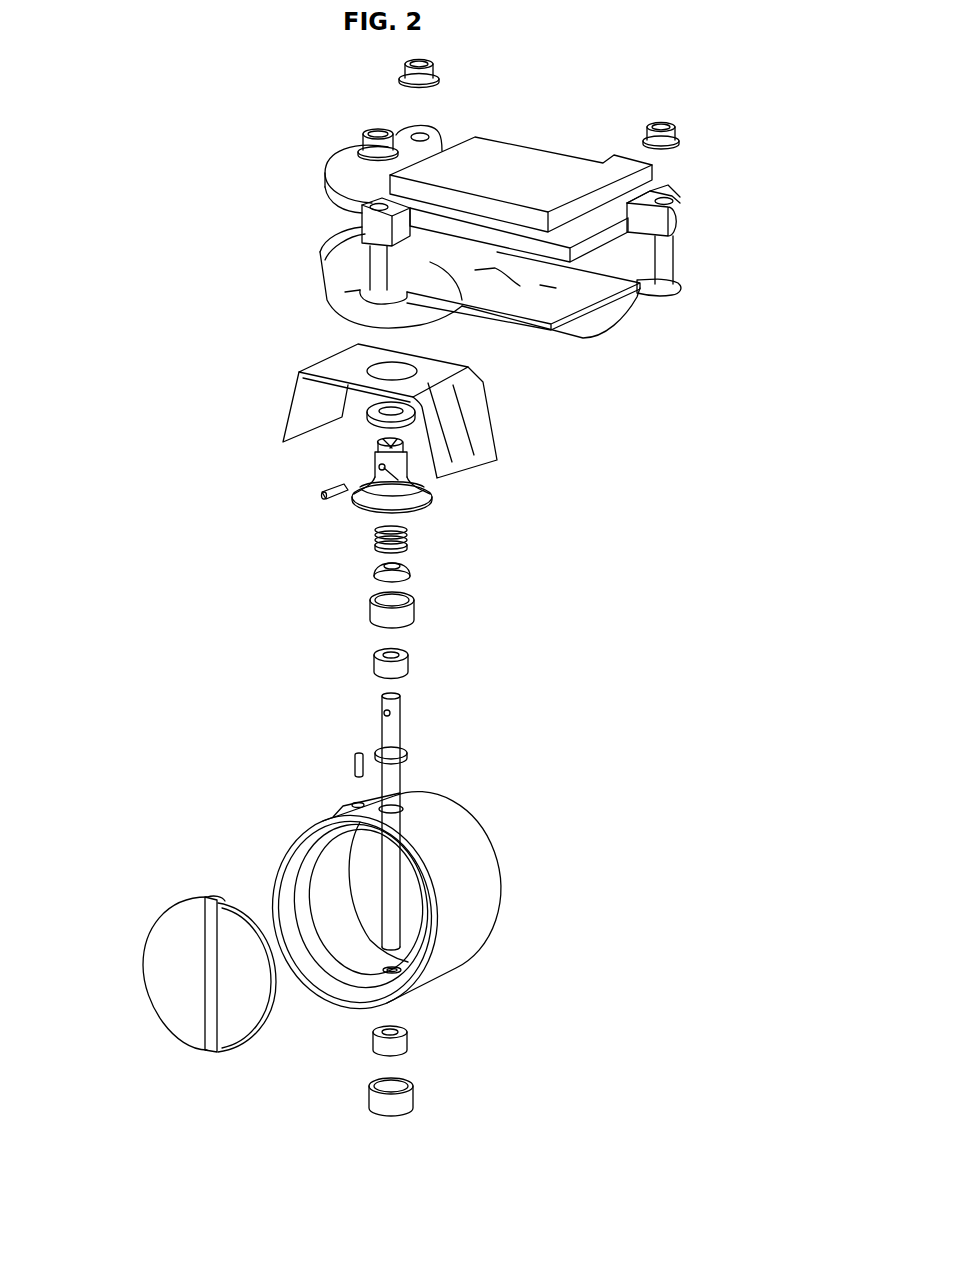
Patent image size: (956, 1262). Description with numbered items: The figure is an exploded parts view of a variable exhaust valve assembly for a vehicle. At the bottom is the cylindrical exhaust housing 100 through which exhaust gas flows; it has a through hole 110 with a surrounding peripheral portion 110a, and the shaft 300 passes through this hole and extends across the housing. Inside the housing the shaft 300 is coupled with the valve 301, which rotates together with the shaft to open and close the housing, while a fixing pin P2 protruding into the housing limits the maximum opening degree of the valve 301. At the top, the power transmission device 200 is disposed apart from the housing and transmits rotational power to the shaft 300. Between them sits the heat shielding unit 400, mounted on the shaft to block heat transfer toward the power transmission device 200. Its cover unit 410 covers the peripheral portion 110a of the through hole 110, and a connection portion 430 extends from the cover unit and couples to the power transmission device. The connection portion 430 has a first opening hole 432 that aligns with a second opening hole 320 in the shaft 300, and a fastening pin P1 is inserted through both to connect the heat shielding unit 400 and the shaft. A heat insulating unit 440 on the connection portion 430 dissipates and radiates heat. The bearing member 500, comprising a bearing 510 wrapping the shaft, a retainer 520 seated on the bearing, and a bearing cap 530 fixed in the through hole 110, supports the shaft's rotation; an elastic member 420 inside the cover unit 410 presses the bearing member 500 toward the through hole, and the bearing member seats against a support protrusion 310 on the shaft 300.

The exhaust housing 100 is at (436, 907).
The through hole 110 is at (405, 806).
The peripheral portion 110a is at (417, 823).
The power transmission device 200 is at (552, 146).
The shaft 300 is at (406, 821).
The valve 301 is at (212, 988).
The support protrusion 310 is at (407, 753).
The second opening hole 320 is at (385, 713).
The fastening pin P1 is at (322, 495).
The fixing pin P2 is at (355, 767).
The heat shielding unit 400 is at (375, 508).
The cover unit 410 is at (358, 500).
The elastic member 420 is at (377, 545).
The connection portion 430 is at (377, 455).
The first opening hole 432 is at (420, 485).
The heat insulating unit 440 is at (366, 413).
The bearing member 500 is at (488, 640).
The bearing 510 is at (400, 667).
The retainer 520 is at (403, 573).
The bearing cap 530 is at (402, 615).